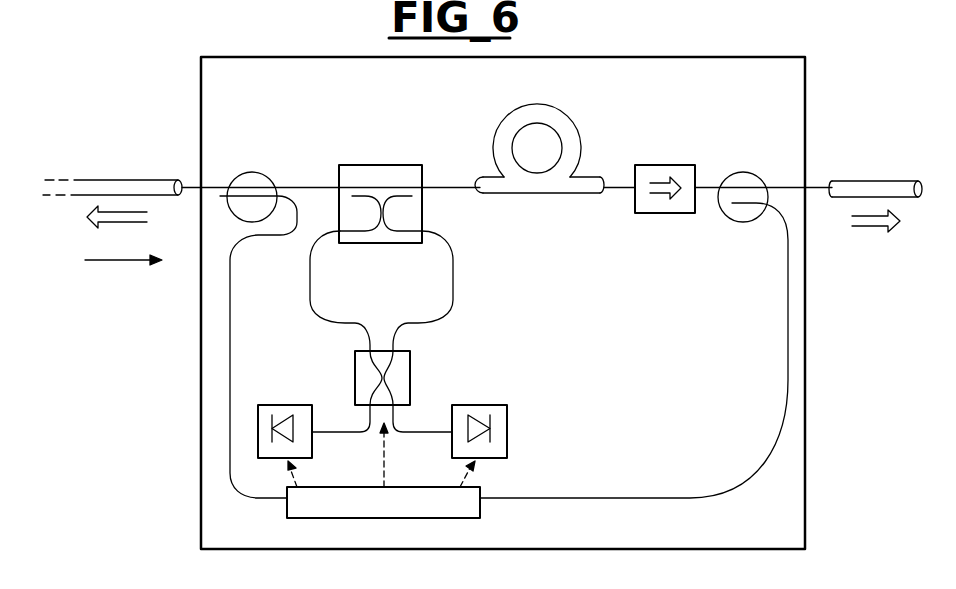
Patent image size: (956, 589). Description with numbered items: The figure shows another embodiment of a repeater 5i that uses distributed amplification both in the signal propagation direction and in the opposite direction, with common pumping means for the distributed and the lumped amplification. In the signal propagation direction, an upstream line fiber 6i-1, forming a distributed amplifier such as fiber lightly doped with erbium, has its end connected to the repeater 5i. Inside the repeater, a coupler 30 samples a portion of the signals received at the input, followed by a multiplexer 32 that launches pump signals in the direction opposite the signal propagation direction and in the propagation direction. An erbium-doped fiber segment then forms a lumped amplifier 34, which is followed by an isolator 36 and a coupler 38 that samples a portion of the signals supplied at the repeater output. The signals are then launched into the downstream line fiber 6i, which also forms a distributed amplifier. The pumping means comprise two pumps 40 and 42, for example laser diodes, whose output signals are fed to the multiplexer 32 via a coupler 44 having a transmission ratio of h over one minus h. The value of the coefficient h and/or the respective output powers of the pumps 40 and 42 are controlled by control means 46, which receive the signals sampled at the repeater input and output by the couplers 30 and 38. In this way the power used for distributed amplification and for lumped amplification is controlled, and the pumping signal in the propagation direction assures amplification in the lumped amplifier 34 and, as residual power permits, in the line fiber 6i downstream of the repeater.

The repeater 5i is at (807, 525).
The line fiber 6i-1 is at (97, 180).
The line fiber 6i is at (862, 181).
The coupler 30 is at (240, 172).
The multiplexer 32 is at (347, 165).
The lumped amplifier 34 is at (517, 109).
The isolator 36 is at (660, 165).
The coupler 38 is at (743, 172).
The pump 40 is at (268, 405).
The pump 42 is at (507, 420).
The coupler 44 is at (410, 372).
The control means 46 is at (480, 512).